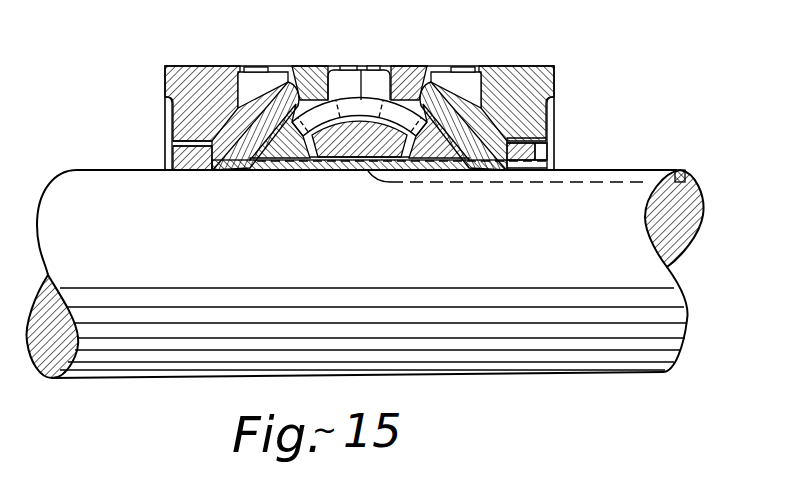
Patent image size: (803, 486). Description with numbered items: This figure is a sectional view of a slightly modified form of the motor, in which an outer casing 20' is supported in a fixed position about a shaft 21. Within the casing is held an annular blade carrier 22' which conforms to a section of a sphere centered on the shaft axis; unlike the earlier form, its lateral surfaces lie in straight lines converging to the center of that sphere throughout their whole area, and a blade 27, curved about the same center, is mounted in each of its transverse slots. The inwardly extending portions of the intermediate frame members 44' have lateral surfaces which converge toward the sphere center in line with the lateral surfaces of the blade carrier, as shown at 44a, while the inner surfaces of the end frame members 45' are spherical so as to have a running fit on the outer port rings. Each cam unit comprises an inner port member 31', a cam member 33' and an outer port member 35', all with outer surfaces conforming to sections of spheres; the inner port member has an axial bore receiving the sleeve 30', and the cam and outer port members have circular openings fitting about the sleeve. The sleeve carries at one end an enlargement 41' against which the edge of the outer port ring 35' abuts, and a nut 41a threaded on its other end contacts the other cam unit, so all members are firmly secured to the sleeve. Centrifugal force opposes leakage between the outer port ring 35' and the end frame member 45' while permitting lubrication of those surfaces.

The outer casing 20' is at (321, 116).
The shaft 21 is at (638, 272).
The blade carrier 22' is at (359, 158).
The blade 27 is at (388, 171).
The sleeve 30' is at (352, 150).
The inner port member 31' is at (359, 161).
The cam member 33' is at (359, 150).
The outer port member 35' is at (353, 189).
The enlargement 41' is at (167, 182).
The nut 41a is at (533, 150).
The intermediate frame member 44' is at (366, 55).
The converging lateral surface 44a is at (285, 85).
The end frame member 45' is at (370, 90).